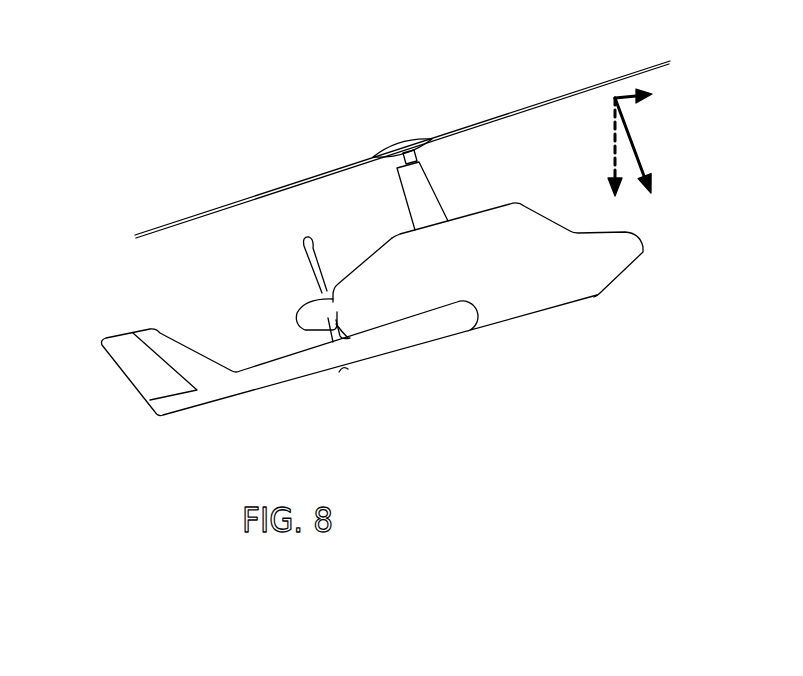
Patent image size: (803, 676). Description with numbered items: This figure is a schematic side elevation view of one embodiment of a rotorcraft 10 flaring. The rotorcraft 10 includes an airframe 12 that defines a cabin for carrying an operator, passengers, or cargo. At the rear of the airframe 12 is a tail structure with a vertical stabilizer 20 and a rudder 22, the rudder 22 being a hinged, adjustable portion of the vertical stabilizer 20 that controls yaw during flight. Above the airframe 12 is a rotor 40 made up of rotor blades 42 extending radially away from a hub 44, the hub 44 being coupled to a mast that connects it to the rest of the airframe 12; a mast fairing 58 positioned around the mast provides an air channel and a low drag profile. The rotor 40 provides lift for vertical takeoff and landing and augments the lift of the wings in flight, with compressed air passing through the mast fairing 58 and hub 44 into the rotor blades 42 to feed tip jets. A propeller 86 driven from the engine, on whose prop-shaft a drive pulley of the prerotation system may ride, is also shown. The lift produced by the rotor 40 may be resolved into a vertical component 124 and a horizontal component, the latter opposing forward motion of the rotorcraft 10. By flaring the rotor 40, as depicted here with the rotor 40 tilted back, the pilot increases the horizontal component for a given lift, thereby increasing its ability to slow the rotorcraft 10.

The rotorcraft 10 is at (368, 255).
The airframe 12 is at (533, 298).
The vertical stabilizer 20 is at (187, 355).
The rudder 22 is at (133, 374).
The rotor 40 is at (388, 110).
The rotor blade 42 is at (545, 97).
The hub 44 is at (408, 146).
The mast fairing 58 is at (430, 202).
The propeller 86 is at (330, 266).
The vertical component 124 is at (610, 146).